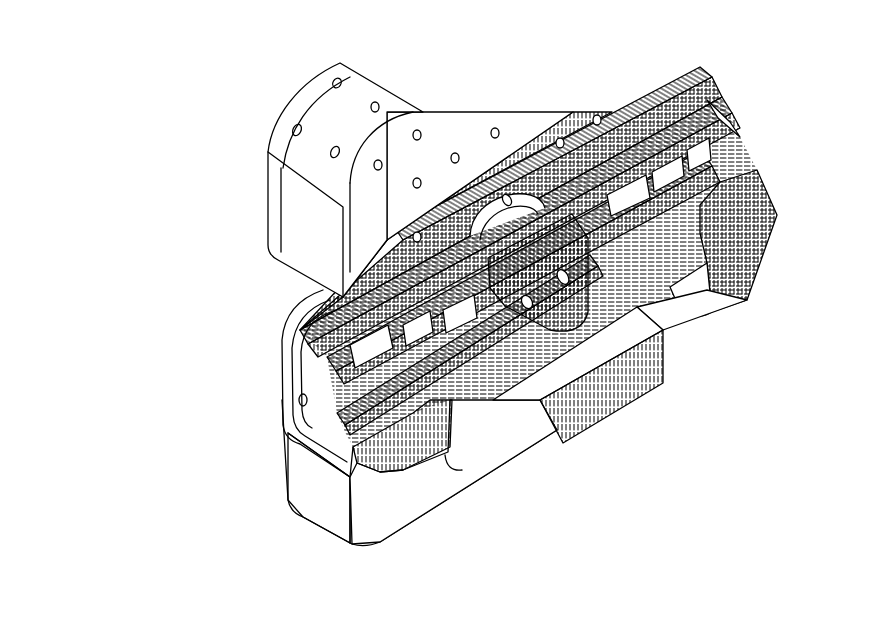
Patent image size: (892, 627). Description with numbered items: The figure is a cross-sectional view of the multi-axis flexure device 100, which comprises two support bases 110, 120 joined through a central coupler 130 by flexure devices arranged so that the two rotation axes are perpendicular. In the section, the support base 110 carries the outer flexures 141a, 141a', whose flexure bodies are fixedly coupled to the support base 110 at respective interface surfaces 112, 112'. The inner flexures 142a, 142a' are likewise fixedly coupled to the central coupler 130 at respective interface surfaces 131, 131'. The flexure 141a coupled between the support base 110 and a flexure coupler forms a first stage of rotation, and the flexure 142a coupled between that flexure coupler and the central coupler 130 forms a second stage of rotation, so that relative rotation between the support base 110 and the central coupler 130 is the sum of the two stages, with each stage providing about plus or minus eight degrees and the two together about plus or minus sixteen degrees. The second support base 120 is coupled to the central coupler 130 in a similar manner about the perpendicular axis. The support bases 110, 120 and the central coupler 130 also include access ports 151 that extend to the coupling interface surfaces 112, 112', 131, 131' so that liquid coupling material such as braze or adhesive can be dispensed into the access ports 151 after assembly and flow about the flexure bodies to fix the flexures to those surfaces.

The multi-axis flexure device 100 is at (157, 45).
The support base 110 is at (357, 538).
The interface surface 112 is at (520, 219).
The interface surface 112' is at (270, 383).
The support base 120 is at (329, 150).
The central coupler 130 is at (505, 112).
The interface surface 131 is at (606, 85).
The interface surface 131' is at (312, 268).
The flexure 141a is at (761, 267).
The flexure 141a' is at (415, 485).
The flexure 142a is at (614, 361).
The flexure 142a' is at (453, 465).
The access ports 151 is at (335, 150).